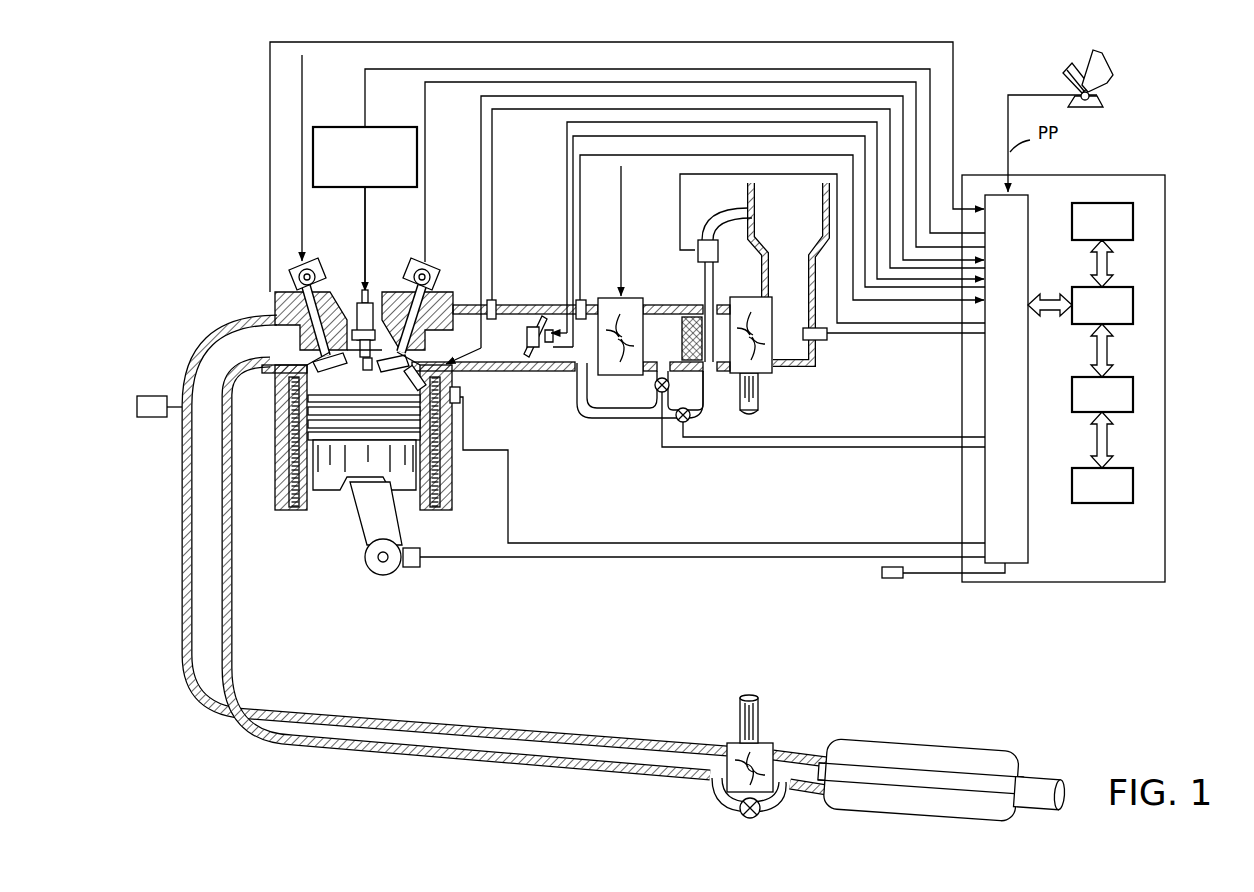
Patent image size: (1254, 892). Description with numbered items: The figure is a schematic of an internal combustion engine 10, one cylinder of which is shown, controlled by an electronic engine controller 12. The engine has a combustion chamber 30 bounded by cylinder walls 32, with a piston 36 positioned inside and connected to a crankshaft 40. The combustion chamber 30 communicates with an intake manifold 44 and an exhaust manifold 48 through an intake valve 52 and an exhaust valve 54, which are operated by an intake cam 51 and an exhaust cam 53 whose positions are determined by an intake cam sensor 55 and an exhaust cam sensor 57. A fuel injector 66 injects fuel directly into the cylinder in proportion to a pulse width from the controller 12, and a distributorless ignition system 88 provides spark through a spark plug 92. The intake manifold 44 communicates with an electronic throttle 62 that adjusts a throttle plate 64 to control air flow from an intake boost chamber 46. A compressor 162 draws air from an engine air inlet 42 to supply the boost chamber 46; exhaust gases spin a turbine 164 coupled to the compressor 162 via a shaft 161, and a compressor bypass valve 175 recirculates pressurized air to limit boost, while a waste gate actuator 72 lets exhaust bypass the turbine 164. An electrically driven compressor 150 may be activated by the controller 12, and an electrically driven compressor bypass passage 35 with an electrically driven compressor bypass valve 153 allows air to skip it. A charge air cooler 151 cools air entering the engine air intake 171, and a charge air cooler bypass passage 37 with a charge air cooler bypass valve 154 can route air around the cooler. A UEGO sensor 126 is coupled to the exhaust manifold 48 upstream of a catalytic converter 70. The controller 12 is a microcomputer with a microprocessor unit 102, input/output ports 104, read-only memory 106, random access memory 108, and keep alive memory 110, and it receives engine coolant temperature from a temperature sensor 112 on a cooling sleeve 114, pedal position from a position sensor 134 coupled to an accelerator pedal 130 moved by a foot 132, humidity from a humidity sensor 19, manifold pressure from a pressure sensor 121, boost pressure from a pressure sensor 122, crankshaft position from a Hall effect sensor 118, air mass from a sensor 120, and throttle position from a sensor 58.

The internal combustion engine 10 is at (220, 248).
The electronic engine controller 12 is at (1165, 178).
The humidity sensor 19 is at (888, 578).
The combustion chamber 30 is at (304, 450).
The cylinder walls 32 is at (312, 508).
The electrically driven compressor bypass passage 35 is at (660, 377).
The piston 36 is at (350, 470).
The charge air cooler bypass passage 37 is at (598, 422).
The crankshaft 40 is at (375, 572).
The engine air inlet 42 is at (779, 202).
The intake manifold 44 is at (486, 352).
The intake boost chamber 46 is at (569, 354).
The exhaust manifold 48 is at (232, 359).
The intake cam 51 is at (410, 260).
The intake valve 52 is at (412, 364).
The exhaust cam 53 is at (315, 260).
The exhaust valve 54 is at (318, 357).
The intake cam sensor 55 is at (430, 284).
The exhaust cam sensor 57 is at (297, 280).
The throttle position sensor 58 is at (548, 325).
The electronic throttle 62 is at (528, 330).
The throttle plate 64 is at (540, 318).
The fuel injector 66 is at (445, 385).
The catalytic converter 70 is at (830, 808).
The waste gate actuator 72 is at (740, 812).
The distributorless ignition system 88 is at (322, 127).
The spark plug 92 is at (369, 298).
The microprocessor unit 102 is at (1133, 300).
The input/output ports 104 is at (1030, 205).
The read-only memory 106 is at (1133, 218).
The random access memory 108 is at (1133, 392).
The keep alive memory 110 is at (1133, 484).
The temperature sensor 112 is at (460, 405).
The cooling sleeve 114 is at (455, 502).
The Hall effect sensor 118 is at (412, 568).
The air mass sensor 120 is at (818, 340).
The pressure sensor 121 is at (492, 298).
The pressure sensor 122 is at (583, 298).
The Universal Exhaust Gas Oxygen sensor 126 is at (137, 403).
The accelerator pedal 130 is at (1063, 72).
The foot 132 is at (1110, 62).
The position sensor 134 is at (1103, 100).
The electrically driven compressor 150 is at (625, 296).
The charge air cooler 151 is at (686, 316).
The electrically driven compressor bypass valve 153 is at (654, 386).
The charge air cooler bypass valve 154 is at (688, 406).
The shaft 161 is at (760, 398).
The compressor 162 is at (755, 296).
The turbine 164 is at (730, 744).
The engine air intake 171 is at (825, 383).
The compressor bypass valve 175 is at (696, 236).